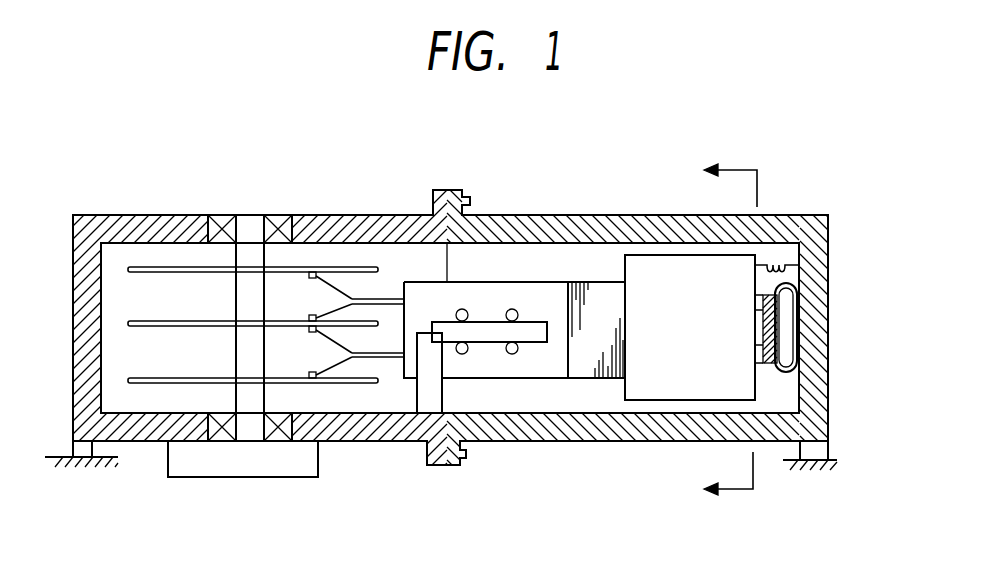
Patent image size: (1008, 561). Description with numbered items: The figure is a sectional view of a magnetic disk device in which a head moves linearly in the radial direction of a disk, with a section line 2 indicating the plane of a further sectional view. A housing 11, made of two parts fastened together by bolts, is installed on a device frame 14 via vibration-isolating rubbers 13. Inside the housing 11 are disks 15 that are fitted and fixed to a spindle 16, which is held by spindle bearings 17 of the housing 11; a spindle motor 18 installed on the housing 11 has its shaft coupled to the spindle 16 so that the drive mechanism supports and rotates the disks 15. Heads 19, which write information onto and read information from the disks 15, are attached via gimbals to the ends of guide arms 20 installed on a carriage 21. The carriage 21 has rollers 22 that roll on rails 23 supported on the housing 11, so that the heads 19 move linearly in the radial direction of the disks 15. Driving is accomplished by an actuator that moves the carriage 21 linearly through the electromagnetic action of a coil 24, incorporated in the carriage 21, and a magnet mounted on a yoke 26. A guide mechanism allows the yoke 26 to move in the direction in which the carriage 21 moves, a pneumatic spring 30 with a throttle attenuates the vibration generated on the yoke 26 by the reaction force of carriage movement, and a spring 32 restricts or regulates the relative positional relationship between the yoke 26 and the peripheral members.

The section line 2- 2 is at (719, 333).
The housing 11 is at (310, 217).
The vibration-isolating rubbers 13 is at (822, 445).
The device frame 14 is at (830, 458).
The disks 15 is at (143, 267).
The spindle 16 is at (255, 226).
The spindle bearings 17 is at (222, 215).
The spindle motor 18 is at (216, 458).
The heads 19 is at (318, 275).
The guide arms 20 is at (383, 298).
The carriage 21 is at (556, 285).
The rollers 22 is at (516, 352).
The rails 23 is at (480, 340).
The coil 24 is at (595, 374).
The yoke 26 is at (683, 389).
The pneumatic spring 30 is at (778, 395).
The spring 32 is at (778, 264).